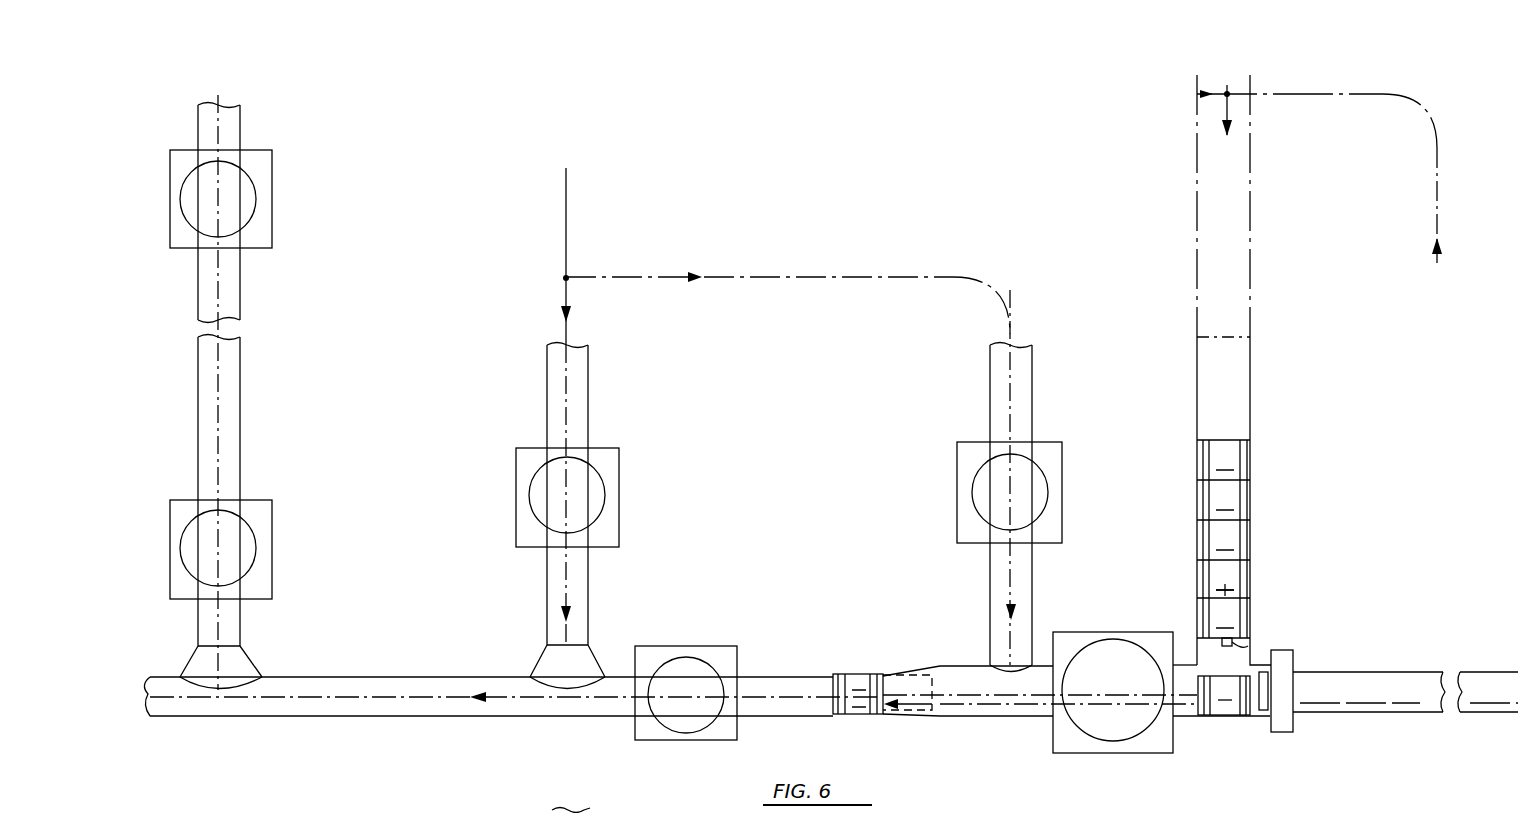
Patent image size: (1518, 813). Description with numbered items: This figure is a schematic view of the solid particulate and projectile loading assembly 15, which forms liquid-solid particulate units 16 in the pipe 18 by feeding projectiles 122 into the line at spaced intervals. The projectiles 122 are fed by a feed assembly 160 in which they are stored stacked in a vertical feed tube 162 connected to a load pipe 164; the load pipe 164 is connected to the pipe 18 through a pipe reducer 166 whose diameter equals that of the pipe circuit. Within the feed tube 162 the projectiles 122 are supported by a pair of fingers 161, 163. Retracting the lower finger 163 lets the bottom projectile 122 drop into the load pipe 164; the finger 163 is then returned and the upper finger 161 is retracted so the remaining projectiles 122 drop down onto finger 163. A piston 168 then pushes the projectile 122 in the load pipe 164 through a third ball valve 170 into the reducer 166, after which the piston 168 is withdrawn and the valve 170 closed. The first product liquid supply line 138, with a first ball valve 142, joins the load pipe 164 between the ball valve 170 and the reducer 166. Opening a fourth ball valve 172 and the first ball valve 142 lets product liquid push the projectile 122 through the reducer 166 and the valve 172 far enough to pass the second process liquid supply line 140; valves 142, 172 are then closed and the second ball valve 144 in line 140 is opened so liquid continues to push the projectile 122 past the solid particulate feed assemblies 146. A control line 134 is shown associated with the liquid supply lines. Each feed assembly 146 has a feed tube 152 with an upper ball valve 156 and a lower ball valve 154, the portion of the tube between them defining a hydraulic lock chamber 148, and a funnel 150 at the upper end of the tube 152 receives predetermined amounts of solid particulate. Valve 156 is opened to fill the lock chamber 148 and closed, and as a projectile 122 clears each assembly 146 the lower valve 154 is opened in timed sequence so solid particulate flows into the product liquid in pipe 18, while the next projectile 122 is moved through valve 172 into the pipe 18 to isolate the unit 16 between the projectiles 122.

The projectile loading assembly 15 is at (1207, 722).
The liquid-solid particulate unit 16 is at (965, 716).
The pipe 18 is at (762, 676).
The projectile 122 is at (857, 680).
The control line 134 is at (567, 192).
The first product liquid supply line 138 is at (990, 386).
The second process liquid supply line 140 is at (546, 403).
The first ball valve 142 is at (957, 520).
The second ball valve 144 is at (516, 496).
The solid particulate feed assembly 146 is at (296, 240).
The hydraulic lock chamber 148 is at (192, 400).
The funnel 150 is at (184, 660).
The feed tube 152 is at (198, 283).
The ball valve 154 is at (272, 552).
The ball valve 156 is at (272, 180).
The feed assembly 160 is at (1442, 555).
The upper finger 161 is at (1236, 572).
The feed tube 162 is at (1252, 407).
The lower finger 163 is at (1245, 645).
The load pipe 164 is at (1185, 716).
The pipe reducer 166 is at (905, 716).
The piston 168 is at (1262, 716).
The third ball valve 170 is at (1160, 598).
The fourth ball valve 172 is at (688, 610).